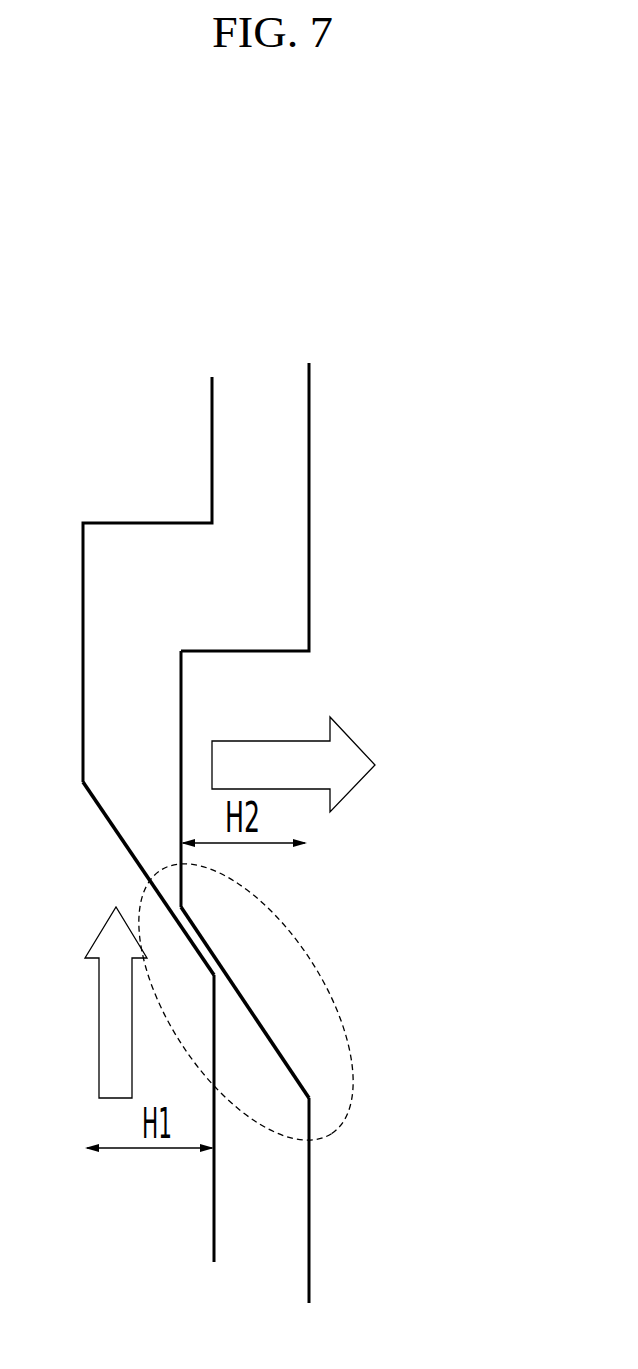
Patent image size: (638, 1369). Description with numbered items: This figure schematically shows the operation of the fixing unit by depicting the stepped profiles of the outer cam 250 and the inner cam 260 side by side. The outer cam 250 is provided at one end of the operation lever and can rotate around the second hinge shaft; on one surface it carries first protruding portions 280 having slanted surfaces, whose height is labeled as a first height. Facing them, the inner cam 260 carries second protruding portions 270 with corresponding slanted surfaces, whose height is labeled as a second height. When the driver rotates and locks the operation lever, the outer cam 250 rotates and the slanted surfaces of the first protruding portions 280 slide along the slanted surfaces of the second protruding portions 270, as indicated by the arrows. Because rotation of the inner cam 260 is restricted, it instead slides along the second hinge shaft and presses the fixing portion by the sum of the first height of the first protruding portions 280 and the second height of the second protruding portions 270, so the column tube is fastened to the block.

The outer cam 250 is at (145, 714).
The inner cam 260 is at (304, 734).
The second protruding portions 270 is at (181, 683).
The first protruding portions 280 is at (214, 1195).